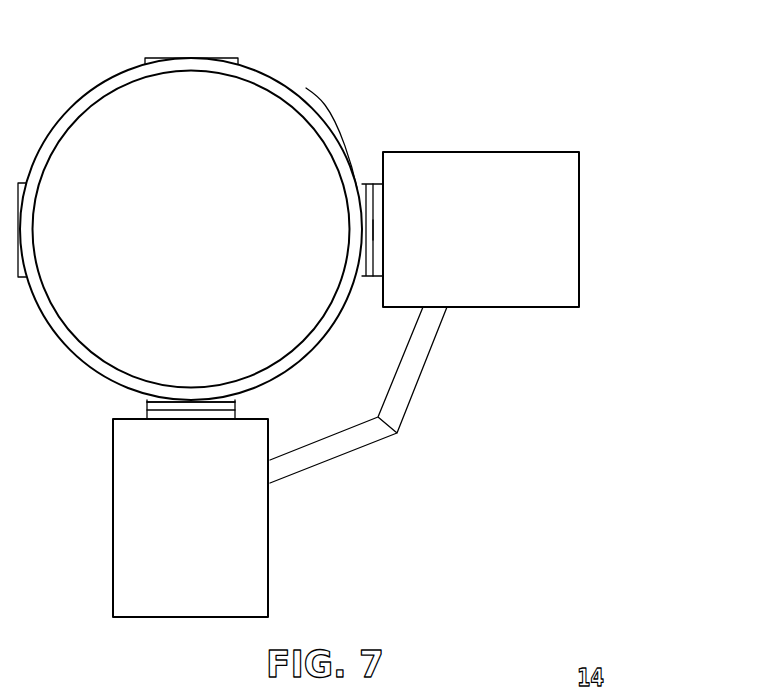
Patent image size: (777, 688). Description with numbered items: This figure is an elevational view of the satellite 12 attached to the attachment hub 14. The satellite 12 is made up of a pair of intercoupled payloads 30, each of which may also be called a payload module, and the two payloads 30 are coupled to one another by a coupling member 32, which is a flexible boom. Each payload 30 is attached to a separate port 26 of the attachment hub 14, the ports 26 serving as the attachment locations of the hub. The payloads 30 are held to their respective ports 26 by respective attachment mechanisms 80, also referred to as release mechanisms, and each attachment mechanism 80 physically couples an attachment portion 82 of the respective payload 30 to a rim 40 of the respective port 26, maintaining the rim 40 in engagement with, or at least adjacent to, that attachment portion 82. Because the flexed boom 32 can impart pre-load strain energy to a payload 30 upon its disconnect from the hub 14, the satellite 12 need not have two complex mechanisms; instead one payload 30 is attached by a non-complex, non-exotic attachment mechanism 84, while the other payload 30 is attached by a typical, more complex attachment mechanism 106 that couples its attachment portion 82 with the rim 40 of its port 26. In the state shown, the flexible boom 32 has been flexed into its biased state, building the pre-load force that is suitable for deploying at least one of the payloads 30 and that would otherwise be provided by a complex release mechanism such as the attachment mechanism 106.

The satellite 12 is at (335, 308).
The attachment hub 14 is at (305, 89).
The port 26 is at (218, 46).
The payload 30 is at (547, 223).
The coupling member 32 is at (431, 347).
The rim 40 is at (364, 184).
The attachment mechanism 80 is at (361, 277).
The attachment portion 82 is at (377, 223).
The non-complex attachment mechanism 84 is at (370, 184).
The complex attachment mechanism 106 is at (237, 403).